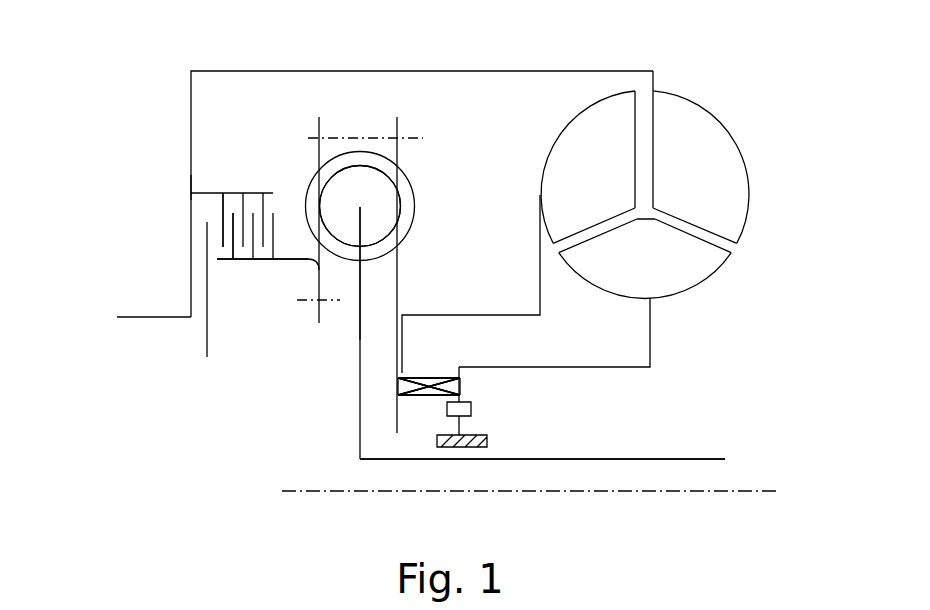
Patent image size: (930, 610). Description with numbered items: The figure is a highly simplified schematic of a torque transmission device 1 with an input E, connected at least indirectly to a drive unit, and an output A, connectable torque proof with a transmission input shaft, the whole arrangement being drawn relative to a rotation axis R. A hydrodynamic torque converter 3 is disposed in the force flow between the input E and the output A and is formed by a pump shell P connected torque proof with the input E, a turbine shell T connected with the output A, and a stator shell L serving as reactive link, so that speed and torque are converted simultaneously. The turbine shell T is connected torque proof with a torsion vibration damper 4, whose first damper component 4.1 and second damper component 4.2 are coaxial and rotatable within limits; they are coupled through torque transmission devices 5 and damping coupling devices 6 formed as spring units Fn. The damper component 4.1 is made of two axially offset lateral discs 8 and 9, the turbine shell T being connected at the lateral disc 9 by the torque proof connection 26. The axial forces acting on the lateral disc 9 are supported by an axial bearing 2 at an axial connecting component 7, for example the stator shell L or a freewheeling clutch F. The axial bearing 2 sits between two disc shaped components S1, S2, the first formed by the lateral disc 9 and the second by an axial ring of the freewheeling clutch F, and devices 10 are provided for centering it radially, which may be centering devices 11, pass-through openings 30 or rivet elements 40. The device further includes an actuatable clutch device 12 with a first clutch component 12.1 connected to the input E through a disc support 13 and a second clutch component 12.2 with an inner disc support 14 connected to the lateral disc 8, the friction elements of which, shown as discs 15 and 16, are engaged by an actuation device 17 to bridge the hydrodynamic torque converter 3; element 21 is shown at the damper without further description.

The torque transmission device 1 is at (519, 42).
The axial bearing 2 is at (422, 405).
The hydrodynamic torque converter 3 is at (680, 177).
The torsion vibration damper 4 is at (358, 219).
The first damper component 4.1 is at (316, 87).
The second damper component 4.2 is at (358, 431).
The torque transmission device 5 is at (387, 200).
The damping coupling device 6 is at (386, 220).
The axial connecting component 7 is at (475, 394).
The lateral disc 8 is at (318, 130).
The lateral disc 9 is at (398, 130).
The devices for centering 10 is at (406, 365).
The centering device 11 is at (417, 374).
The pass-through opening 30 is at (429, 386).
The rivet element 40 is at (429, 386).
The actuatable clutch device 12 is at (216, 212).
The first clutch component 12.1 is at (193, 182).
The second clutch component 12.2 is at (222, 270).
The disc support 13 is at (191, 183).
The disc support 14 is at (233, 268).
The upper comb tooth 15 is at (222, 217).
The lower comb tooth 16 is at (232, 252).
The actuation device 17 is at (207, 330).
The pin 21 is at (360, 402).
The torque proof connection 26 is at (387, 338).
The input E is at (117, 317).
The spring unit Fn is at (373, 185).
The first disc shaped component S1 is at (391, 377).
The second disc shaped component S2 is at (475, 376).
The freewheeling clutch F is at (463, 410).
The output A is at (628, 460).
The turbine shell T is at (610, 110).
The pump shell P is at (733, 203).
The stator shell L is at (675, 275).
The rotation axis R is at (350, 493).